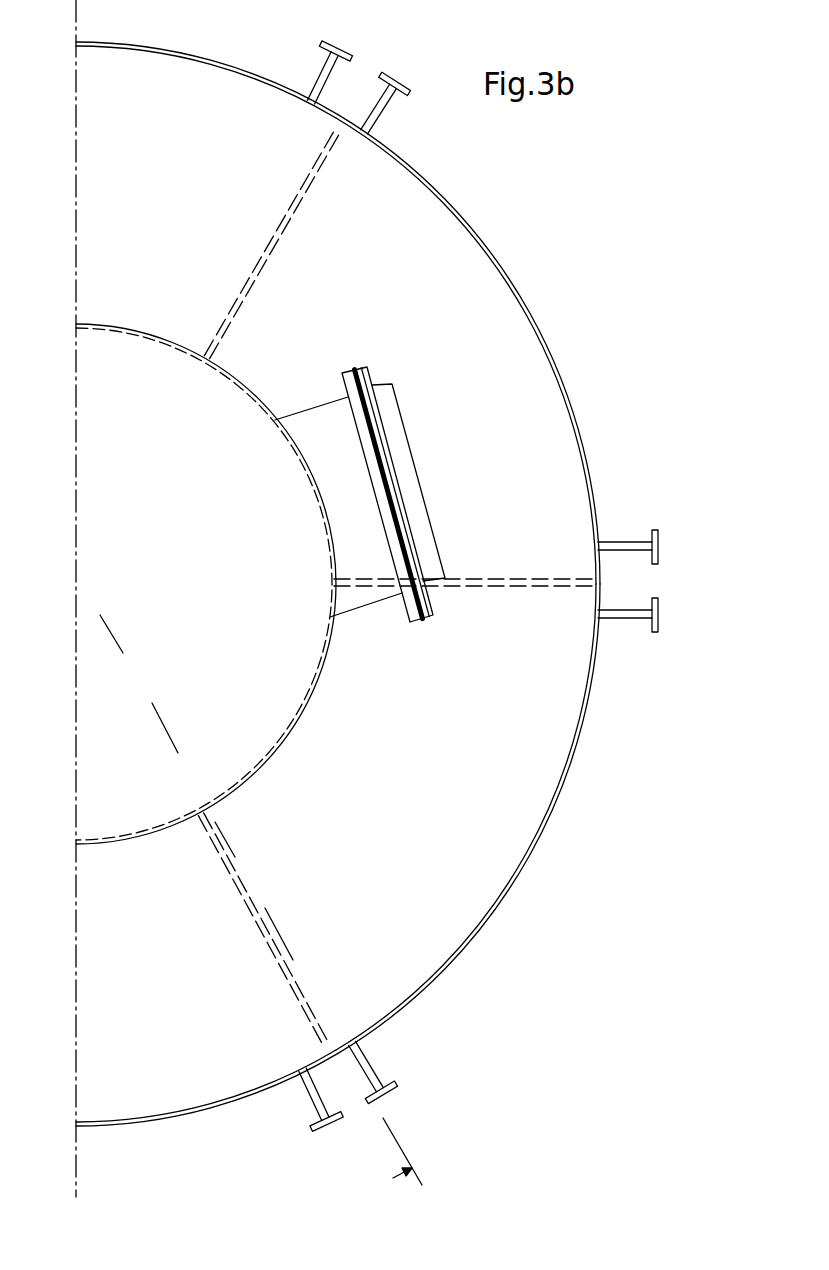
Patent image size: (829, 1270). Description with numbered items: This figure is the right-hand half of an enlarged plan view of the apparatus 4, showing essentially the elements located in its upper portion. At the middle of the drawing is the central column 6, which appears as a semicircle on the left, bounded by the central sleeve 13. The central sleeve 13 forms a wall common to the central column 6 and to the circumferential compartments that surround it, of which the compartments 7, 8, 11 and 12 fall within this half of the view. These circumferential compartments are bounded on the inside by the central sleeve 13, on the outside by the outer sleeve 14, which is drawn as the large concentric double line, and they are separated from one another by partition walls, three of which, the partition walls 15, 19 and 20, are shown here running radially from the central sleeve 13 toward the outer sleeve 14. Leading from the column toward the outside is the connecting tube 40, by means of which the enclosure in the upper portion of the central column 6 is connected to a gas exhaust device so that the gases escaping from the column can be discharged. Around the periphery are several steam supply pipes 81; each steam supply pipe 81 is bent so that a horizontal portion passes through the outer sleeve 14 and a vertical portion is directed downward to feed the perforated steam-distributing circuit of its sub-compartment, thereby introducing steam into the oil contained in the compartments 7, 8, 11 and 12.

The tyre segment / mould part 4 is at (536, 203).
The central column 6 is at (95, 678).
The circumferential compartment 7 is at (455, 905).
The circumferential compartment 8 is at (230, 1057).
The circumferential compartment 11 is at (190, 92).
The circumferential compartment 12 is at (432, 247).
The central sleeve 13 is at (145, 832).
The outer sleeve 14 is at (448, 968).
The partition wall 15 is at (220, 845).
The partition wall 19 is at (295, 185).
The partition wall 20 is at (535, 577).
The connecting tube 40 is at (360, 528).
The steam supply pipe 81 is at (353, 52).